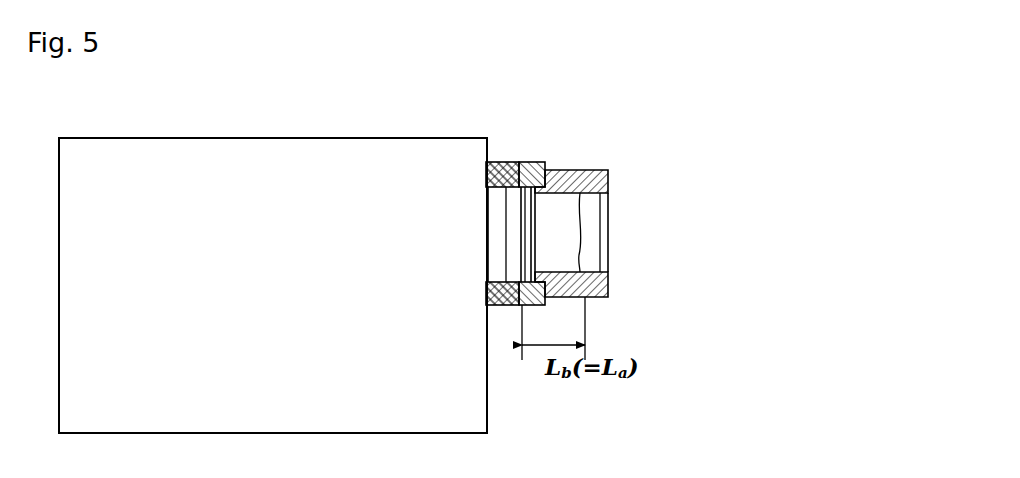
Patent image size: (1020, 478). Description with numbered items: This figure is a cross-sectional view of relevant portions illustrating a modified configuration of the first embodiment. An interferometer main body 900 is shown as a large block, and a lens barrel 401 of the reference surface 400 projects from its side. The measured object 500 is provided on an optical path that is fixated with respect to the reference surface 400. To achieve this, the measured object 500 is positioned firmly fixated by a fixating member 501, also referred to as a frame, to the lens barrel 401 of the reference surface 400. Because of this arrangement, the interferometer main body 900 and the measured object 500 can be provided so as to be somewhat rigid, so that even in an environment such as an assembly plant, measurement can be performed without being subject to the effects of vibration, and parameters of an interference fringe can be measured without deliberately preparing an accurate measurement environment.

The interferometer main body 900 is at (122, 138).
The lens barrel 401 is at (504, 140).
The reference surface 400 is at (531, 147).
The measured object 500 is at (612, 151).
The fixating member 501 is at (621, 169).